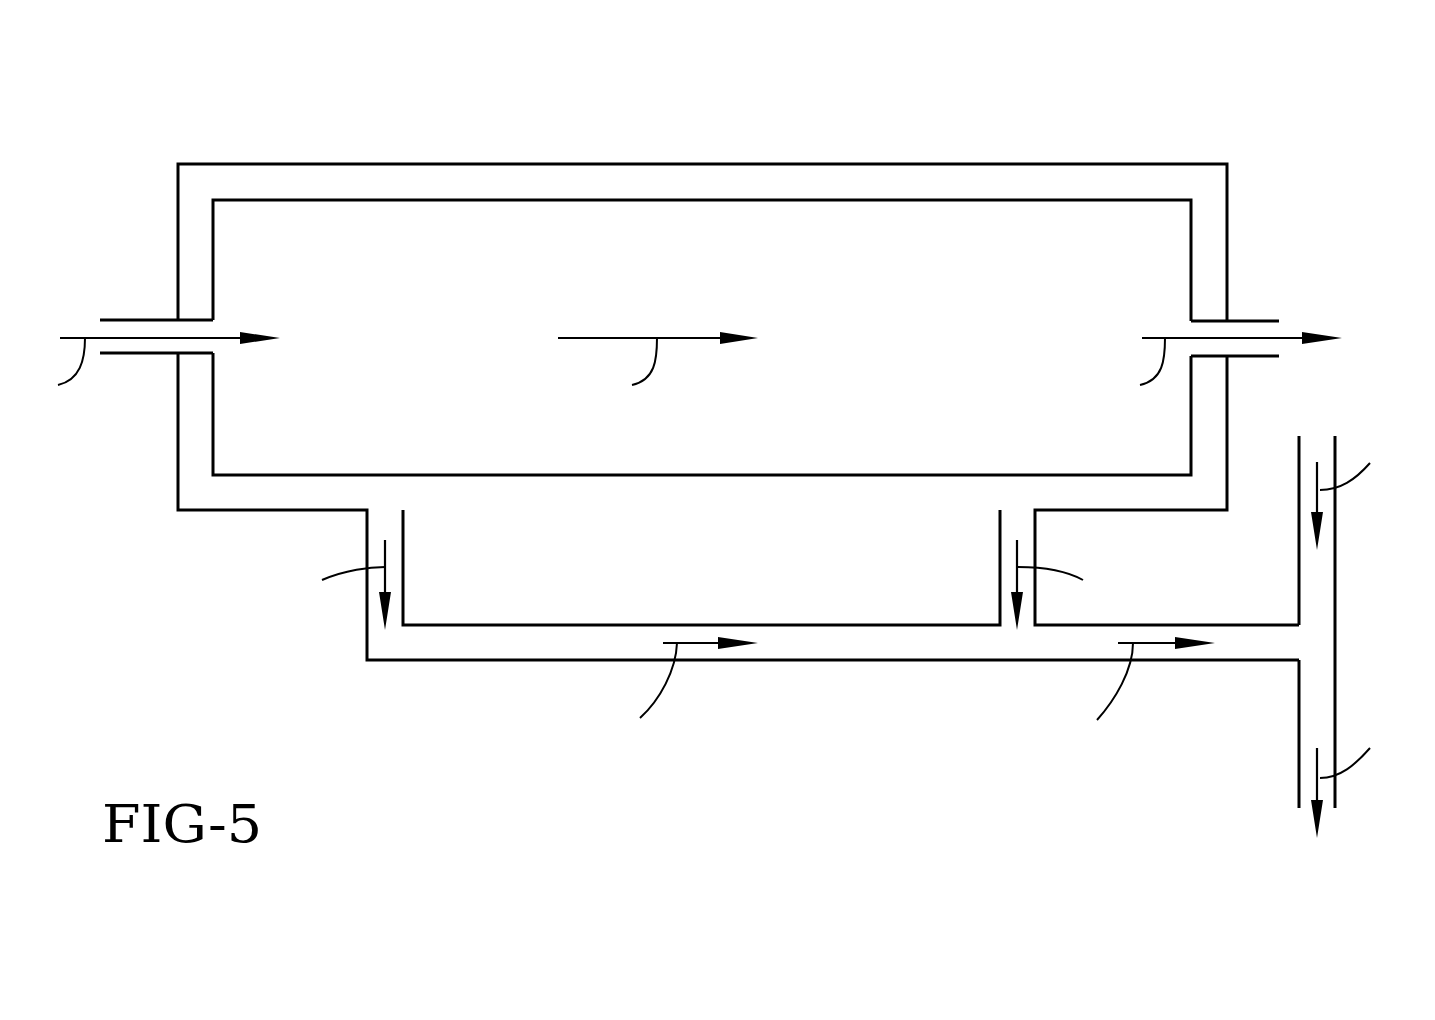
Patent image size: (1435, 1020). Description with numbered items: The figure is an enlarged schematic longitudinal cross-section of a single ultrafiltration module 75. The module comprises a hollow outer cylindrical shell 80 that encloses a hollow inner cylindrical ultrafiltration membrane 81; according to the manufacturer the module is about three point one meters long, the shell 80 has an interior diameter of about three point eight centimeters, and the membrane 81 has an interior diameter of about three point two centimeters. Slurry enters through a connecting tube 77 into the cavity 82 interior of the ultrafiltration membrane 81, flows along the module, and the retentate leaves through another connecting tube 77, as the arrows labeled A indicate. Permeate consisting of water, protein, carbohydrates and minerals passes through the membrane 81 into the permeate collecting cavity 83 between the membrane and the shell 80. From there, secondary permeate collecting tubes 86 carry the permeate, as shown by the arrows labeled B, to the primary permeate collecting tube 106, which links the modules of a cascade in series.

The ultrafiltration module 75 is at (258, 116).
The connecting tube 77 is at (132, 318).
The outer cylindrical shell 80 is at (468, 163).
The ultrafiltration membrane 81 is at (430, 200).
The cavity 82 is at (903, 288).
The permeate collecting cavity 83 is at (1017, 186).
The secondary permeate collecting tube 86 is at (385, 525).
The primary permeate collecting tube 106 is at (1318, 588).